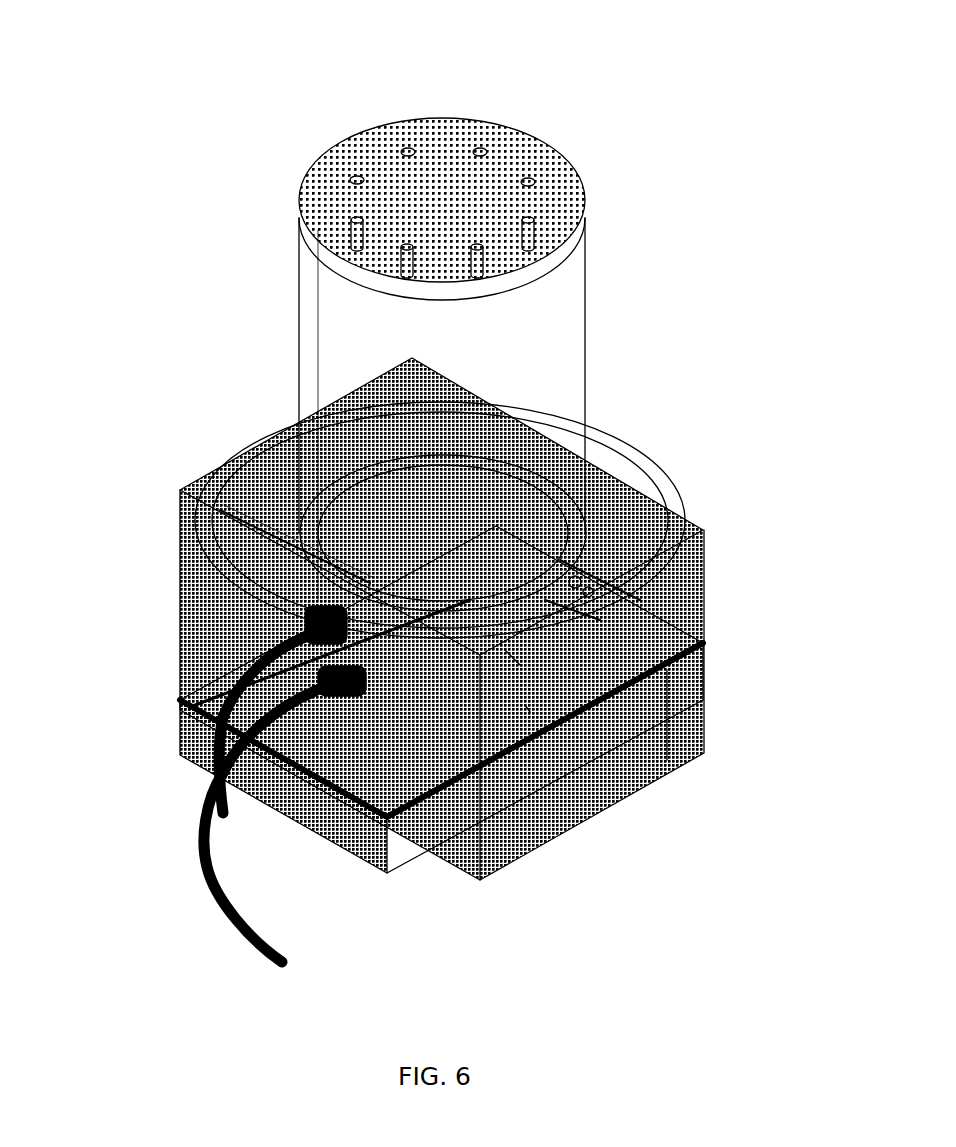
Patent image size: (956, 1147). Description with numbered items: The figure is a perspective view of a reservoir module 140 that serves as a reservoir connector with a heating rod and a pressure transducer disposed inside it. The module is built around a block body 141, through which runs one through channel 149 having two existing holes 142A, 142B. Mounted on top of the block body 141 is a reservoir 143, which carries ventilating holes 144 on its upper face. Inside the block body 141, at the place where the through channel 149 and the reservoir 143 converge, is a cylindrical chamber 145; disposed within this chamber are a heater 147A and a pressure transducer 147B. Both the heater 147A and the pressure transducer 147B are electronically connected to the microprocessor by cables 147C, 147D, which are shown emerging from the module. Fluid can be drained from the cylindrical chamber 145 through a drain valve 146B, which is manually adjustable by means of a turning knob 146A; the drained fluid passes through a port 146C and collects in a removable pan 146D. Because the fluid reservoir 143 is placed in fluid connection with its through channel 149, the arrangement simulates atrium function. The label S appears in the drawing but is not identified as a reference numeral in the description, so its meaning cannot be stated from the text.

The reservoir module 140 is at (756, 80).
The block body 141 is at (670, 530).
The existing hole 142A is at (495, 618).
The existing hole 142B is at (325, 548).
The reservoir 143 is at (340, 375).
The ventilating holes 144 is at (408, 150).
The cylindrical chamber 145 is at (413, 703).
The turning knob 146A is at (578, 578).
The drain valve 146B is at (587, 585).
The port 146C is at (560, 614).
The removable pan 146D is at (700, 677).
The heater 147A is at (313, 623).
The pressure transducer 147B is at (318, 693).
The cable 147C is at (262, 664).
The cable 147D is at (212, 888).
The through channel 149 is at (510, 655).
The sample S is at (525, 705).